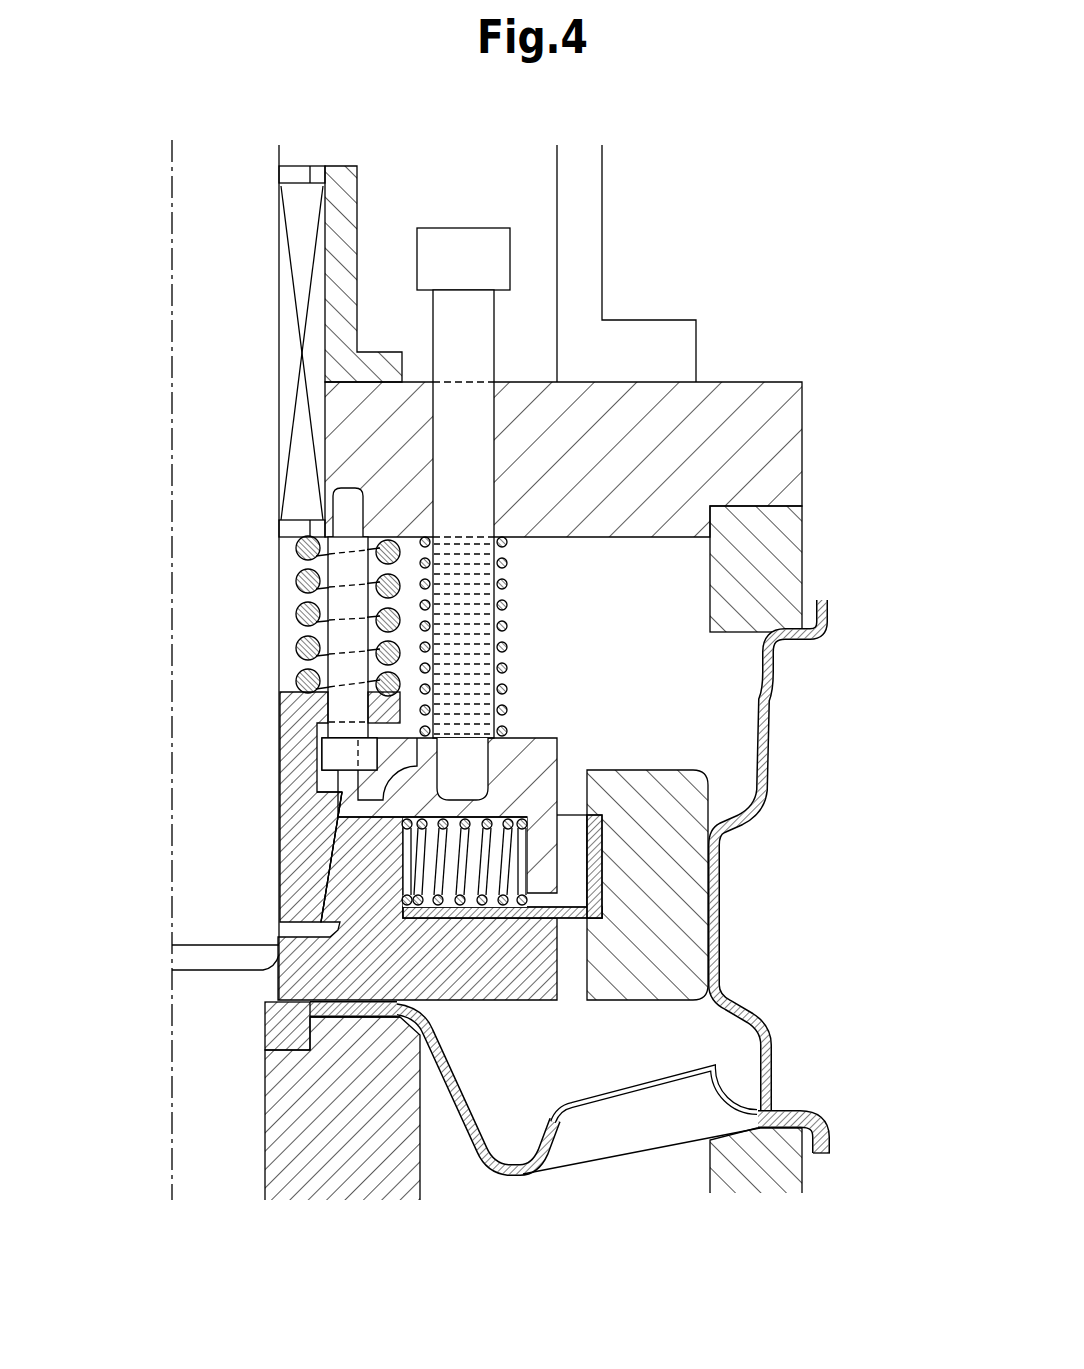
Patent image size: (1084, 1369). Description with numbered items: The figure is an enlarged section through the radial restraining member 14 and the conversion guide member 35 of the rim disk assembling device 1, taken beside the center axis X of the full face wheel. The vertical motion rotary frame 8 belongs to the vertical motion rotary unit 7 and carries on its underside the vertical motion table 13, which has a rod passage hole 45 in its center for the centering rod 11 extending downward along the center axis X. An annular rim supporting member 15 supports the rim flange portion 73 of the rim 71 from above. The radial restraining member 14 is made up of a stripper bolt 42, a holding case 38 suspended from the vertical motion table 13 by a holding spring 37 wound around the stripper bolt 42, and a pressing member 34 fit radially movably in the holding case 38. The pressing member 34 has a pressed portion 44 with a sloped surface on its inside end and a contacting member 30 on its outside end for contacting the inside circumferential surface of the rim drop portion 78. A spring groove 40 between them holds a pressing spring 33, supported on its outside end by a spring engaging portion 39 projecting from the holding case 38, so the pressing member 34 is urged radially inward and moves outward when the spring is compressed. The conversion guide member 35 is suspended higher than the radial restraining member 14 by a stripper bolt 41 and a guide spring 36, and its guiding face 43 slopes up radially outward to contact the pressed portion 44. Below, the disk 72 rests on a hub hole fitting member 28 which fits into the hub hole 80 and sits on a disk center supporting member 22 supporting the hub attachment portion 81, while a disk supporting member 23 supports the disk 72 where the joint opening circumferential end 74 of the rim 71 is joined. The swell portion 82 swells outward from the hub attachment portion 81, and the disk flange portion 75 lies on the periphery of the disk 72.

The rim disk assembling device 1 is at (768, 278).
The vertical motion rotary unit 7 is at (637, 320).
The vertical motion rotary frame 8 is at (583, 214).
The centering rod 11 is at (218, 408).
The vertical motion table 13 is at (765, 398).
The radial restraining member 14 is at (573, 740).
The rim supporting member 15 is at (782, 530).
The disk center supporting member 22 is at (310, 1095).
The disk supporting member 23 is at (777, 1173).
The hub hole fitting member 28 is at (265, 1005).
The contacting member 30 is at (697, 900).
The pressing spring 33 is at (495, 919).
The pressing member 34 is at (393, 920).
The conversion guide member 35 is at (338, 797).
The guide spring 36 is at (298, 565).
The holding spring 37 is at (508, 568).
The holding case 38 is at (542, 745).
The spring engaging portion 39 is at (542, 842).
The spring groove 40 is at (477, 820).
The stripper bolt 41 is at (338, 597).
The stripper bolt 42 is at (452, 330).
The guiding face 43 is at (317, 888).
The pressed portion 44 is at (337, 852).
The rod passage hole 45 is at (281, 238).
The rim 71 is at (768, 723).
The disk 72 is at (480, 1137).
The rim flange portion 73 is at (828, 625).
The joint opening circumferential end 74 is at (770, 1108).
The disk flange portion 75 is at (828, 1128).
The rim drop portion 78 is at (717, 940).
The hub hole 80 is at (265, 1020).
The hub attachment portion 81 is at (360, 1020).
The swell portion 82 is at (530, 1174).
The center axis X is at (165, 250).